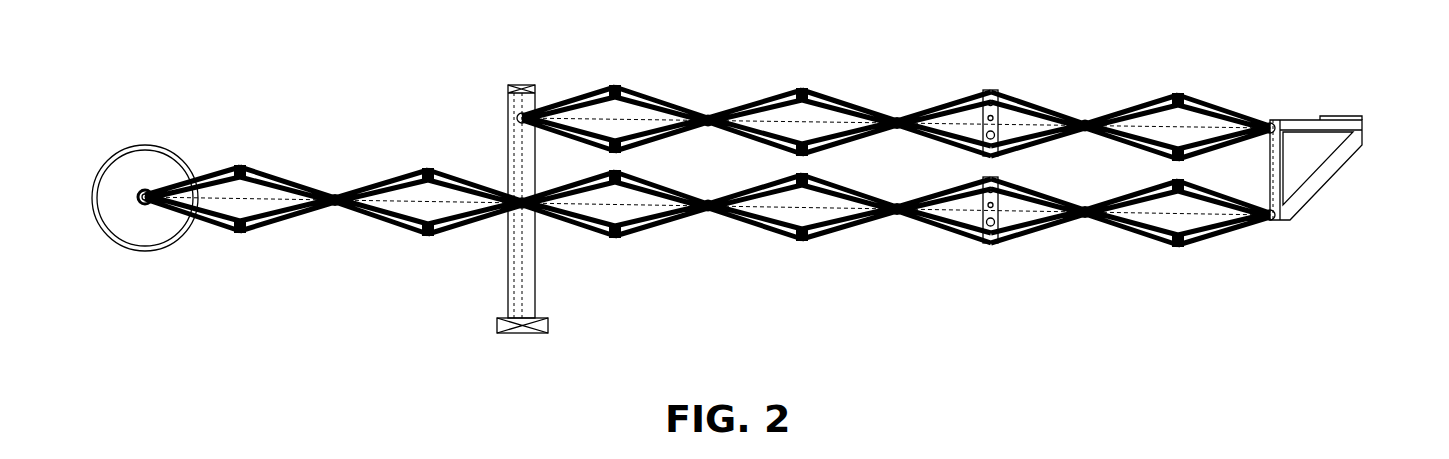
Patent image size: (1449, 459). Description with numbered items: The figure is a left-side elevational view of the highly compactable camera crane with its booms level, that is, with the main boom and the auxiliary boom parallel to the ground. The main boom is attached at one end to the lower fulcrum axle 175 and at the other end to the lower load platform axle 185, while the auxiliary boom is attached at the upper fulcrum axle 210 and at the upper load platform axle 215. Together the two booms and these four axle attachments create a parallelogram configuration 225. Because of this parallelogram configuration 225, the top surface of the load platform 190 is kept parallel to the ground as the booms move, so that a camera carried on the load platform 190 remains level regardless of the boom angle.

The upper fulcrum axle 210 is at (522, 118).
The parallelogram configuration 225 is at (807, 122).
The upper load platform axle 215 is at (1273, 120).
The load platform 190 is at (1332, 117).
The lower load platform axle 185 is at (1268, 220).
The lower fulcrum axle 175 is at (526, 207).